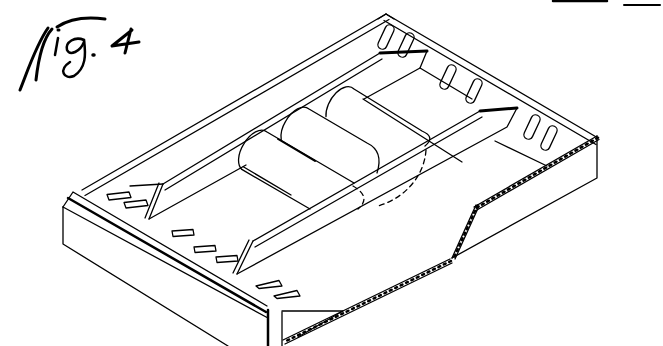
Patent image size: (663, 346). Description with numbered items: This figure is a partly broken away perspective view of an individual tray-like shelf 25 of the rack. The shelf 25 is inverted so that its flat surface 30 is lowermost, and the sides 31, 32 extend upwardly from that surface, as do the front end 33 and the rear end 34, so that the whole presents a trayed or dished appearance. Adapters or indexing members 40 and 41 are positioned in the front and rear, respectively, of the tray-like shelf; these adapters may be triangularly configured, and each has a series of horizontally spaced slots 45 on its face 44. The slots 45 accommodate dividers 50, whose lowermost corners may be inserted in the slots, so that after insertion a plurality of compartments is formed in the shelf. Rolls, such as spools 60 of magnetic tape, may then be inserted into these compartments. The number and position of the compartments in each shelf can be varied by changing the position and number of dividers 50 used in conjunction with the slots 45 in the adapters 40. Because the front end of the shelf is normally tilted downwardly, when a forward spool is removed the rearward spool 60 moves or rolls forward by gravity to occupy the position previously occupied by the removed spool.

The shelf 25 is at (587, 111).
The flat surface 30 is at (434, 226).
The side 31 is at (217, 118).
The side 32 is at (528, 202).
The front end 33 is at (148, 284).
The rear end 34 is at (527, 93).
The adapter 40 is at (90, 189).
The adapter 41 is at (386, 15).
The face 44 is at (441, 61).
The slot 45 is at (207, 235).
The divider 50 is at (452, 158).
The spool 60 is at (287, 117).